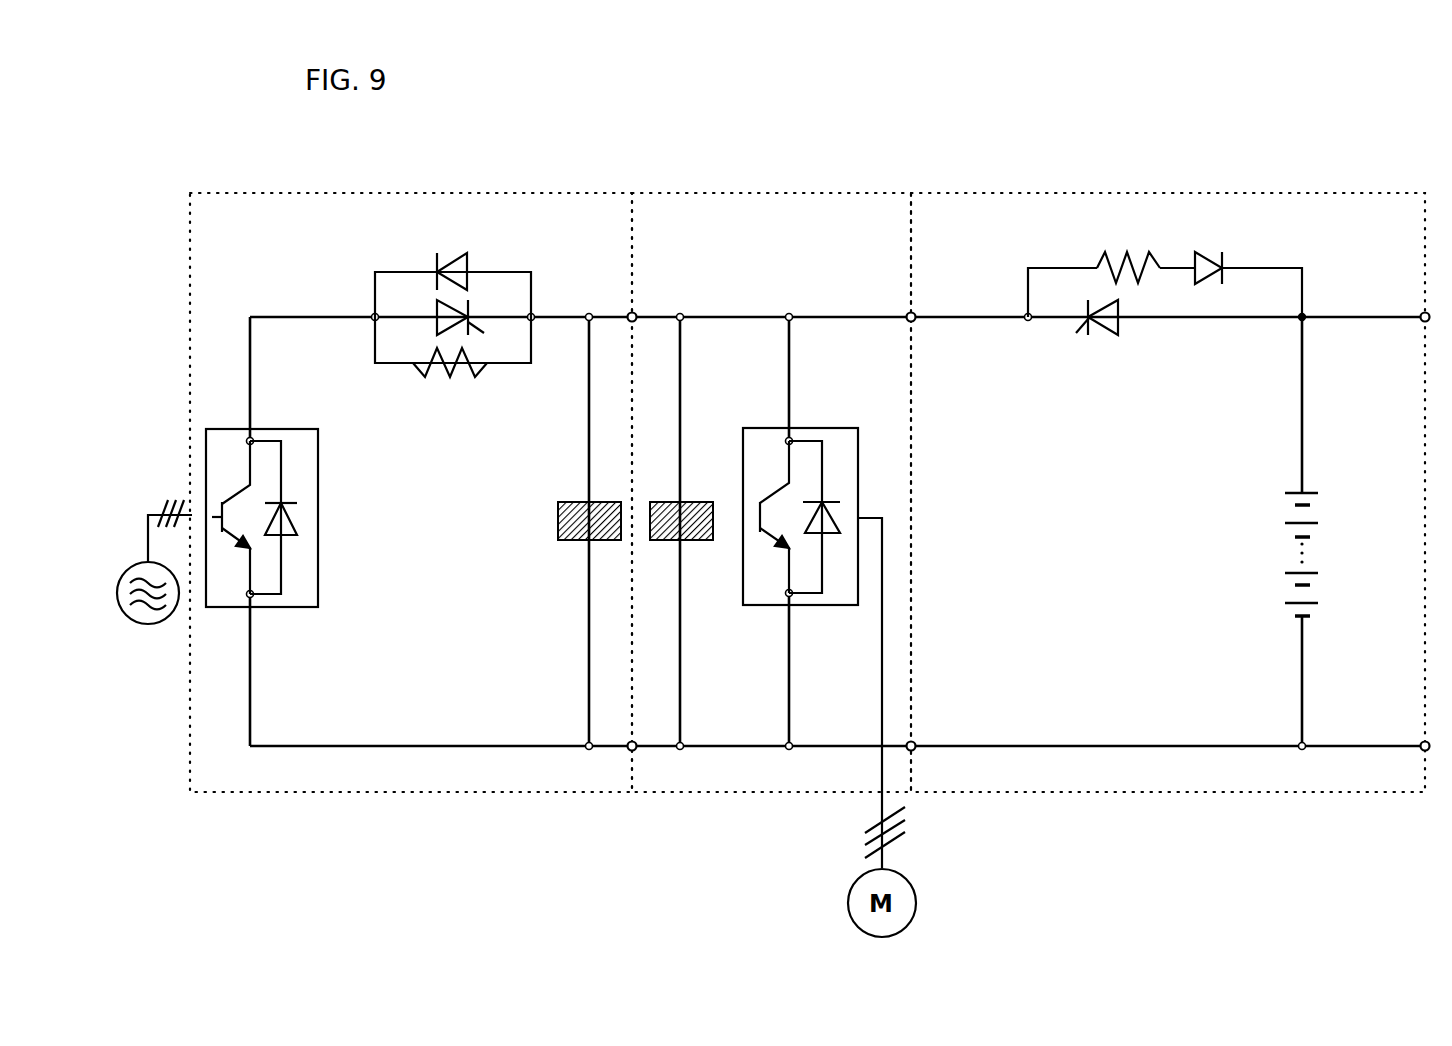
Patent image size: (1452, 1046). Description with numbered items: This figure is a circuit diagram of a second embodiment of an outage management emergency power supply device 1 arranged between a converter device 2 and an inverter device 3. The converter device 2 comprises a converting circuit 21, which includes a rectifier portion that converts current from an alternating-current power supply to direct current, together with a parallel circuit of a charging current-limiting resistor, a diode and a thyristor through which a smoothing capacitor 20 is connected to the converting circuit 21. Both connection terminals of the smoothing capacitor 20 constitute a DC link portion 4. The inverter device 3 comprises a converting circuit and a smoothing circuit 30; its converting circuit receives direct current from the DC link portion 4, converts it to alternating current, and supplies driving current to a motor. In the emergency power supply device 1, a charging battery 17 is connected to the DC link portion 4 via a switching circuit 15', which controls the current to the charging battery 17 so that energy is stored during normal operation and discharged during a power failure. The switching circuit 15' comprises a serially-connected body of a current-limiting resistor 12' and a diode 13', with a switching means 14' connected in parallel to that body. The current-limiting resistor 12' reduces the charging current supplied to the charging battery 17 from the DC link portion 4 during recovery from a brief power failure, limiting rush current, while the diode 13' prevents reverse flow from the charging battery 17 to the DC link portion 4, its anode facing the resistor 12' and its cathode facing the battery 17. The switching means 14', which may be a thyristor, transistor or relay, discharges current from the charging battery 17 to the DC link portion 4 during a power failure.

The emergency power supply device 1 is at (1283, 200).
The converter device 2 is at (482, 200).
The inverter device 3 is at (853, 200).
The DC link portion 4 is at (957, 315).
The current-limiting resistor 12' is at (1141, 190).
The diode 13' is at (1239, 187).
The switching means 14' is at (1141, 372).
The switching circuit 15' is at (1096, 405).
The charging battery 17 is at (1273, 554).
The smoothing capacitor 20 is at (570, 545).
The converting circuit 21 is at (318, 548).
The smoothing circuit 30 is at (699, 542).